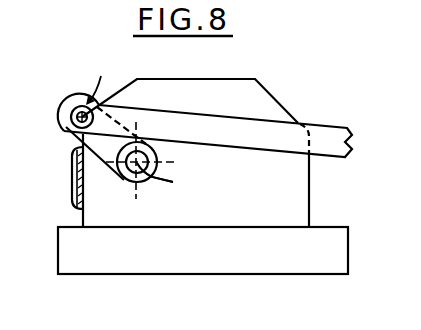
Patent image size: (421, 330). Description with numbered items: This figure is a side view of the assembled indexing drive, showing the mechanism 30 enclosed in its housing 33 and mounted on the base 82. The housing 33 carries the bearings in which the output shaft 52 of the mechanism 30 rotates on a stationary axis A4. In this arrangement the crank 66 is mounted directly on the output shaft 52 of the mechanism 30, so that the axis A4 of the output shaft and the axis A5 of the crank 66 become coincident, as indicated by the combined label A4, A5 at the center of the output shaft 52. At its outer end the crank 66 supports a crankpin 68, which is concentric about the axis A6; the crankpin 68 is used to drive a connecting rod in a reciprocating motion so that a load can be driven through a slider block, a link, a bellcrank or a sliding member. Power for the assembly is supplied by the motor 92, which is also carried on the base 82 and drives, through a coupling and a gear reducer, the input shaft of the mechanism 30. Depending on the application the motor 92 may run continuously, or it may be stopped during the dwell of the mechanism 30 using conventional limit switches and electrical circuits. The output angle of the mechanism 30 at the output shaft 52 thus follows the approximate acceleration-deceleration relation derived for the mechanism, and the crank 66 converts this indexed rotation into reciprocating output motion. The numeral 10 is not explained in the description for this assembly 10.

The apparatus 10 is at (328, 158).
The mechanism 30 is at (302, 119).
The housing 33 is at (233, 78).
The output shaft 52 is at (122, 181).
The crank 66 is at (66, 110).
The crankpin 68 is at (72, 124).
The base 82 is at (222, 274).
The motor 92 is at (68, 188).
The stationary axis of output shaft A4 is at (173, 179).
The crank axis A5 is at (188, 179).
The crankpin axis A6 is at (105, 80).